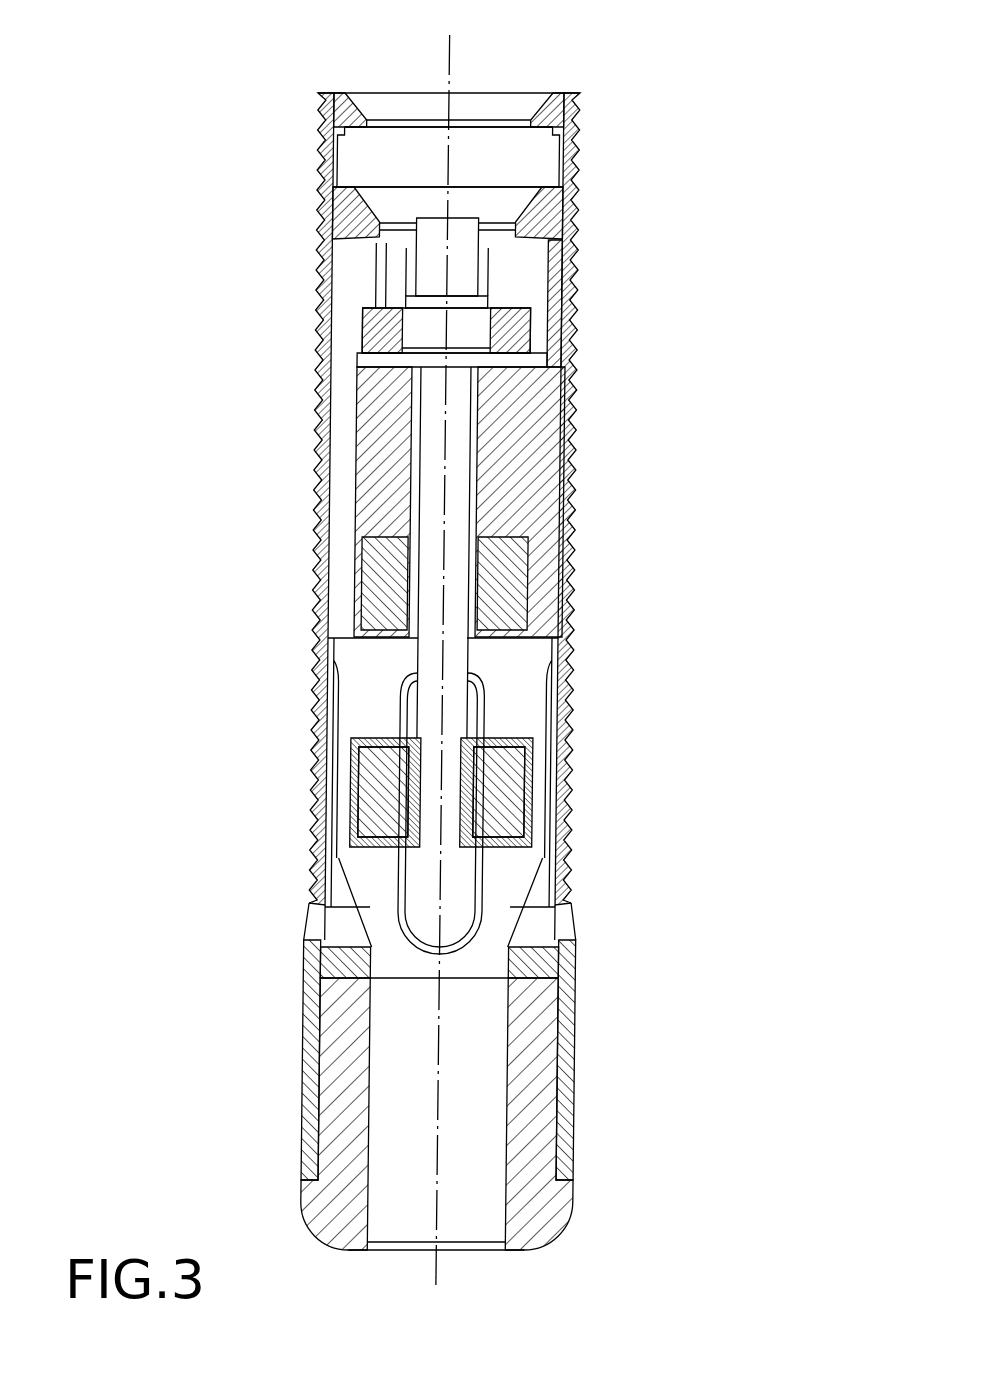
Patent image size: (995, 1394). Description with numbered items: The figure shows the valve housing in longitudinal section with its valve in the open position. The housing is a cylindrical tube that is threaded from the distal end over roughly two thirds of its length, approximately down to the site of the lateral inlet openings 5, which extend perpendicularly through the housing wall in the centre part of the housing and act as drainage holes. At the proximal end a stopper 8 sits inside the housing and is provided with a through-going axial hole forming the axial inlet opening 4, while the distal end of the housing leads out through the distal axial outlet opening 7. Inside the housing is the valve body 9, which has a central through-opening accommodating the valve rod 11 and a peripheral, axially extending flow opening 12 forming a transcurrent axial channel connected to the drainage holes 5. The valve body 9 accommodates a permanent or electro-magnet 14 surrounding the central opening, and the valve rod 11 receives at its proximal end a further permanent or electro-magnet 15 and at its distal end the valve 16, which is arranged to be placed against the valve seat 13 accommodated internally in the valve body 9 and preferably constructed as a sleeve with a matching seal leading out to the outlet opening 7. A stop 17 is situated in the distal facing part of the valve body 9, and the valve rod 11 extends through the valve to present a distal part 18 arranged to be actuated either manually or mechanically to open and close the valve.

The axial inlet opening 4 is at (470, 1112).
The lateral inlet openings 5 is at (422, 883).
The distal axial outlet opening 7 is at (412, 142).
The stopper 8 is at (343, 1068).
The valve body 9 is at (527, 428).
The valve rod 11 is at (430, 654).
The peripheral axially extending flow opening 12 is at (343, 470).
The valve seat 13 is at (546, 212).
The permanent or electro-magnet 14 is at (484, 520).
The permanent or electro-magnet 15 is at (533, 787).
The valve 16 is at (507, 333).
The stop 17 is at (362, 356).
The distal part of valve rod 18 is at (426, 258).